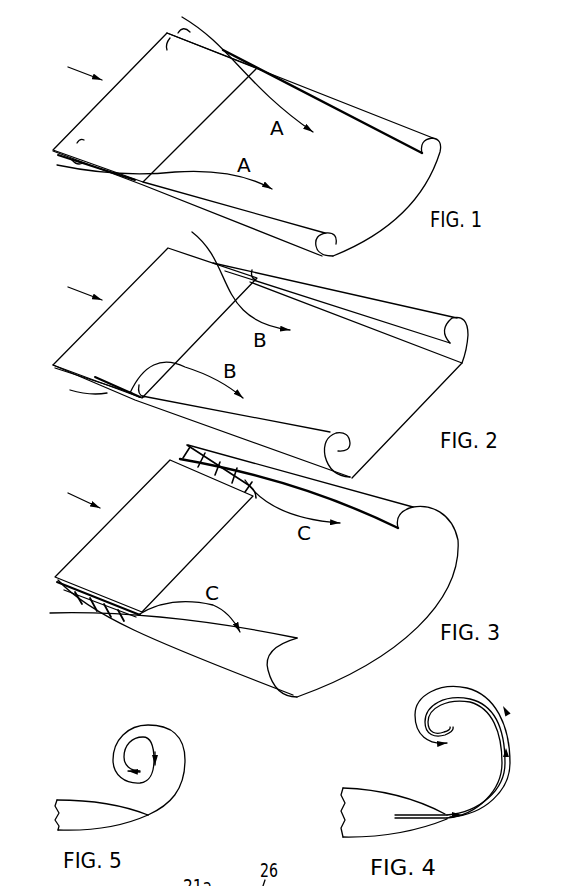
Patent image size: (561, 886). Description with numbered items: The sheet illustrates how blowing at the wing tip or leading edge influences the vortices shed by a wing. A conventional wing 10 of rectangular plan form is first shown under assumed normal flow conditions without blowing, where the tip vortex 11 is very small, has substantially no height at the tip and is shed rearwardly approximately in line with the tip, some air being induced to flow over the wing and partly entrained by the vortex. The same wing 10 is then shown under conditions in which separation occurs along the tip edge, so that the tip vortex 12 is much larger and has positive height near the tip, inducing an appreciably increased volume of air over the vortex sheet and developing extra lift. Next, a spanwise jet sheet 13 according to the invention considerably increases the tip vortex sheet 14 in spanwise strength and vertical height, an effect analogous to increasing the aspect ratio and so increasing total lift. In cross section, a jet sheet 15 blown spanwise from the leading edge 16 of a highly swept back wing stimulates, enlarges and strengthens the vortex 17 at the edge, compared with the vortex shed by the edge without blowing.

In FIG. 1, the conventional wing 10 is at (161, 119).
In FIG. 2, the conventional wing 10 is at (161, 332).
In FIG. 3, the conventional wing 10 is at (164, 544).
In FIG. 1, the tip vortex 11 is at (395, 128).
In FIG. 2, the tip vortex 12 is at (433, 334).
In FIG. 3, the spanwise jet sheet 13 is at (187, 443).
In FIG. 3, the tip vortex sheet 14 is at (403, 503).
In FIG. 3, the jet sheet 15 is at (97, 493).
In FIG. 4, the jet sheet 15 is at (490, 802).
In FIG. 4, the leading edge 16 is at (447, 815).
In FIG. 4, the vortex 17 is at (454, 724).